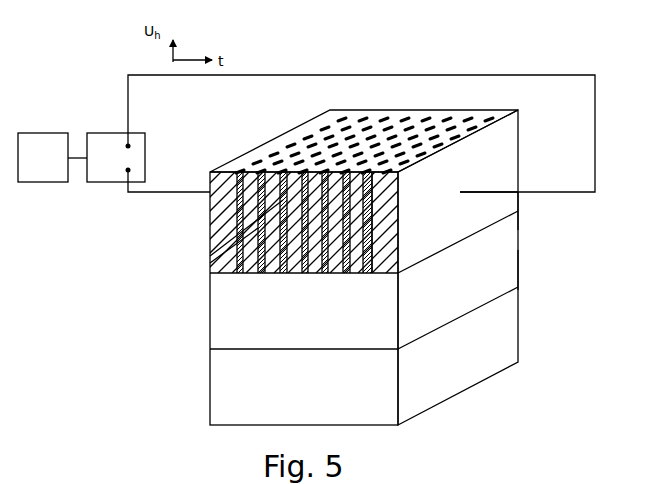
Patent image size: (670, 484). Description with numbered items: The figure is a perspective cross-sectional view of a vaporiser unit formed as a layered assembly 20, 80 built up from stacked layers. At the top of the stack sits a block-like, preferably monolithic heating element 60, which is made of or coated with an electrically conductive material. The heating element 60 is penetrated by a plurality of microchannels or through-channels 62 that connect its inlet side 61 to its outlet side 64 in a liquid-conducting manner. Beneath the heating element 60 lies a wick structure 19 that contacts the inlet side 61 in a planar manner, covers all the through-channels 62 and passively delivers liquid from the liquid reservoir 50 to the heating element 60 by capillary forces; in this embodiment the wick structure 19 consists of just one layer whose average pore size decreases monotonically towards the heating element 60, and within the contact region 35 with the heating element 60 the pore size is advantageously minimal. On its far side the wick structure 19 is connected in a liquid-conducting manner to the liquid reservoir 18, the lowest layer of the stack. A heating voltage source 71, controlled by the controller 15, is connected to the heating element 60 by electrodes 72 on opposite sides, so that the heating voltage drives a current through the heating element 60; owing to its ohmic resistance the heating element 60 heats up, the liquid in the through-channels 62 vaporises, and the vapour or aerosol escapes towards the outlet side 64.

The controller 15 is at (54, 167).
The heating voltage source 71 is at (146, 157).
The outlet side 64 is at (305, 140).
The electrodes 72 is at (460, 192).
The heating element 60 is at (208, 215).
The through-channels 62 is at (210, 256).
The inlet side 61 is at (338, 274).
The wick structure 19 is at (205, 274).
The liquid reservoir 50 is at (314, 397).
The contact region 35 is at (522, 222).
The layered assembly 20 is at (575, 275).
The component 80 is at (541, 267).
The liquid reservoir 18 is at (520, 330).